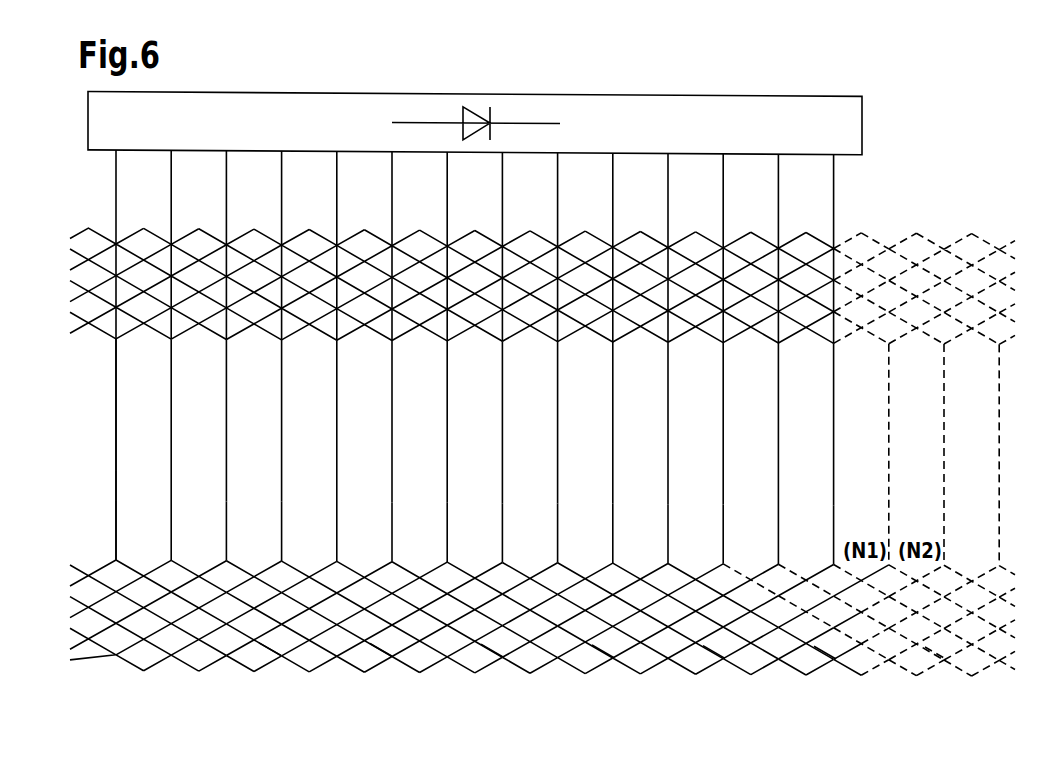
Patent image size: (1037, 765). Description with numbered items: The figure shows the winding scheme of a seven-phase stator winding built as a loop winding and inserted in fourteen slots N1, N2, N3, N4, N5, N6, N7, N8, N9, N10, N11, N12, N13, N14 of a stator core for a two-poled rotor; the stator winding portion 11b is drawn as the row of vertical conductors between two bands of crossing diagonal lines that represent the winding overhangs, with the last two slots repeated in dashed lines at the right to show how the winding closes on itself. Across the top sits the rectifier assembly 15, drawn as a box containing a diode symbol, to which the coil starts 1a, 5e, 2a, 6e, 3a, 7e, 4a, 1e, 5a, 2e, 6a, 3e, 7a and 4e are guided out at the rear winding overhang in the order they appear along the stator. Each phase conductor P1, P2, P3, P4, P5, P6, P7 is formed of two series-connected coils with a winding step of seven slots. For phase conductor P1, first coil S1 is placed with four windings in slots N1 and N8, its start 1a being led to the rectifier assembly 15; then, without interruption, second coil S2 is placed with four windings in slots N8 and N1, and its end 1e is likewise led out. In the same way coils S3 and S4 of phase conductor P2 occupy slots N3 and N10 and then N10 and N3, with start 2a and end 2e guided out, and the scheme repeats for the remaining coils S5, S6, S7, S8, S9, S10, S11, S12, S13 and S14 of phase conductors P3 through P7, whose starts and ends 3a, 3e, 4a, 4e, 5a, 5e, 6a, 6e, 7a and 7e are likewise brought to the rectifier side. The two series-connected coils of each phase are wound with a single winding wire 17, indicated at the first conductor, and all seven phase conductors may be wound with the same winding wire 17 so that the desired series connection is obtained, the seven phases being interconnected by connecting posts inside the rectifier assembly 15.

The rectifier assembly 15 is at (862, 122).
The winding wire 17 is at (116, 370).
The stator winding portion 11b is at (100, 487).
The coil start 1a is at (116, 165).
The coil end 5e is at (171, 165).
The coil start 2a is at (226, 165).
The coil end 6e is at (282, 165).
The coil start 3a is at (337, 165).
The coil end 7e is at (392, 165).
The coil start 4a is at (447, 165).
The coil end 1e is at (502, 165).
The coil start 5a is at (558, 165).
The coil end 2e is at (613, 165).
The coil start 6a is at (668, 165).
The coil end 3e is at (723, 165).
The coil start 7a is at (778, 165).
The coil end 4e is at (834, 165).
The first coil S1 is at (116, 400).
The second coil S2 is at (502, 400).
The coil S3 is at (226, 400).
The coil S4 is at (613, 400).
The coil S5 is at (337, 400).
The coil S6 is at (723, 400).
The coil S7 is at (447, 400).
The coil S8 is at (834, 400).
The coil S9 is at (171, 400).
The coil S10 is at (558, 400).
The coil S11 is at (282, 400).
The coil S12 is at (668, 400).
The coil S13 is at (392, 400).
The coil S14 is at (778, 400).
The slot N1 is at (101, 531).
The slot N2 is at (156, 531).
The slot N3 is at (211, 531).
The slot N4 is at (266, 532).
The slot N5 is at (321, 532).
The slot N6 is at (377, 532).
The slot N7 is at (432, 532).
The slot N8 is at (487, 532).
The slot N9 is at (542, 533).
The slot N10 is at (590, 533).
The slot N11 is at (646, 533).
The slot N12 is at (701, 534).
The slot N13 is at (756, 534).
The slot N14 is at (811, 534).
The phase conductor P1 is at (270, 650).
The phase conductor P2 is at (381, 650).
The phase conductor P3 is at (492, 650).
The phase conductor P4 is at (603, 650).
The phase conductor P5 is at (714, 650).
The phase conductor P6 is at (825, 650).
The phase conductor P7 is at (936, 650).